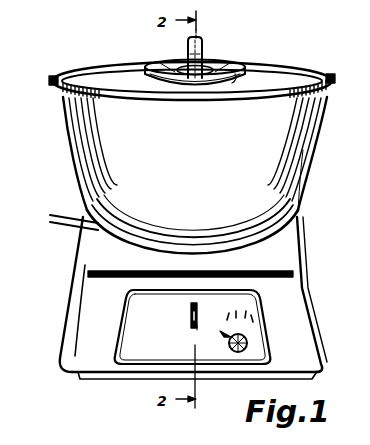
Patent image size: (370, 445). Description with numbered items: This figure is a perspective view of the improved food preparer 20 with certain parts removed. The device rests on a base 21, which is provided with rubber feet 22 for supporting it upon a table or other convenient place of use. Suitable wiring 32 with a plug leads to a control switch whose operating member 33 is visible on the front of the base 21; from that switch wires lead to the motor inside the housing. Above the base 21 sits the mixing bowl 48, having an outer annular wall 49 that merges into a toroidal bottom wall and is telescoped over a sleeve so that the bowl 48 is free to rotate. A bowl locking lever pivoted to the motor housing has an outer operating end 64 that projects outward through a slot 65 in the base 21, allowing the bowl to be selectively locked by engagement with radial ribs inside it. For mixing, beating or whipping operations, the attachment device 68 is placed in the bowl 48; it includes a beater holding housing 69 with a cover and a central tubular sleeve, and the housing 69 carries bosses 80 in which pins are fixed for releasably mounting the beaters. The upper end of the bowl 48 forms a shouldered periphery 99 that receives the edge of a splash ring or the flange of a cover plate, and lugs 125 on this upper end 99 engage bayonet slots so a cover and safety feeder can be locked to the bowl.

The food preparer 20 is at (307, 192).
The base 21 is at (303, 278).
The rubber feet 22 is at (326, 377).
The wiring 32 is at (69, 215).
The operating member 33 is at (230, 327).
The mixing bowl 48 is at (310, 138).
The outer annular wall 49 is at (210, 177).
The outer operating end 64 is at (190, 306).
The slot 65 is at (195, 327).
The mixing, beating and whipping attachment device 68 is at (219, 63).
The beater holding housing 69 is at (246, 76).
The bosses 80 is at (188, 57).
The upper shouldered periphery 99 is at (313, 73).
The lugs 125 is at (54, 87).